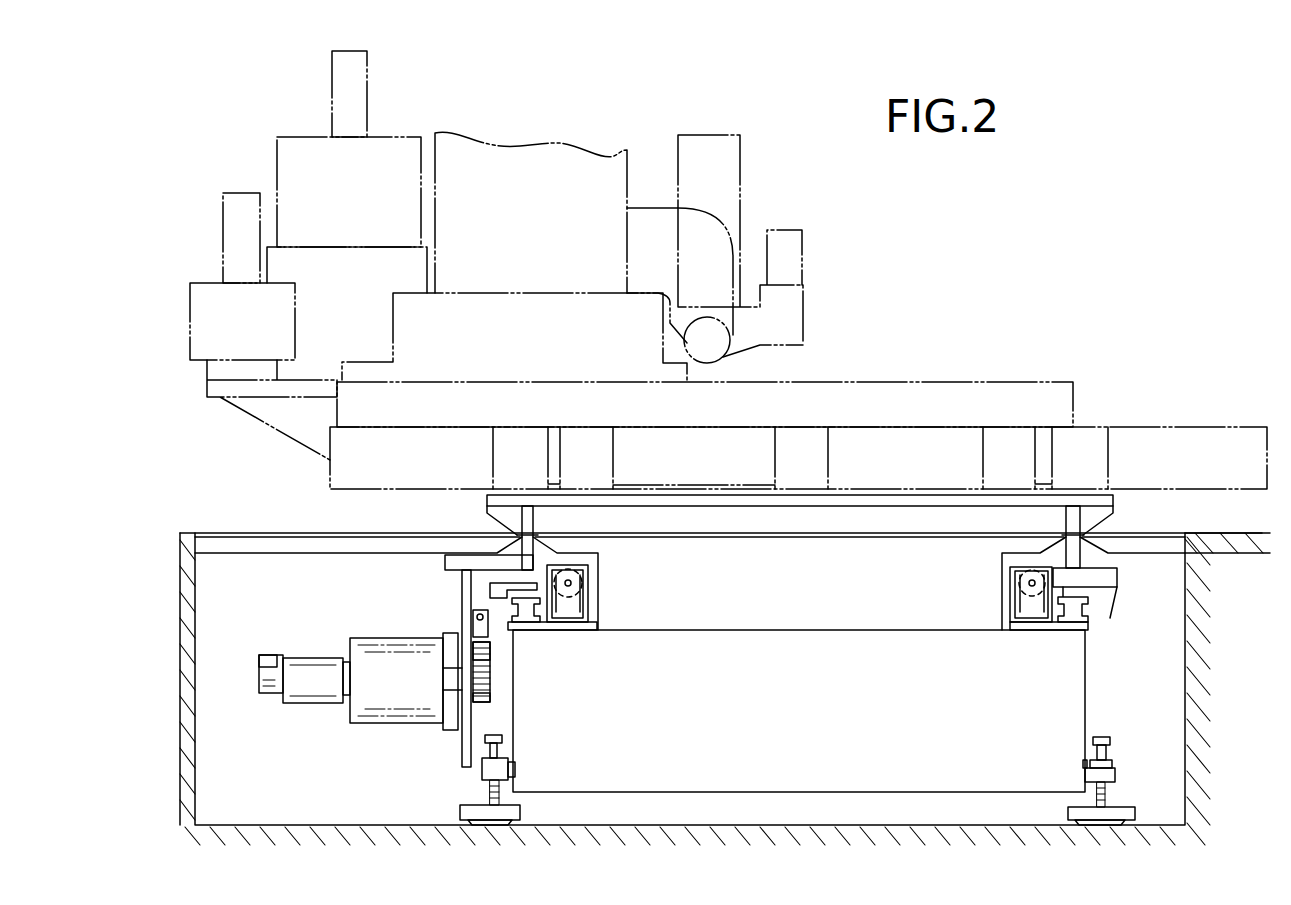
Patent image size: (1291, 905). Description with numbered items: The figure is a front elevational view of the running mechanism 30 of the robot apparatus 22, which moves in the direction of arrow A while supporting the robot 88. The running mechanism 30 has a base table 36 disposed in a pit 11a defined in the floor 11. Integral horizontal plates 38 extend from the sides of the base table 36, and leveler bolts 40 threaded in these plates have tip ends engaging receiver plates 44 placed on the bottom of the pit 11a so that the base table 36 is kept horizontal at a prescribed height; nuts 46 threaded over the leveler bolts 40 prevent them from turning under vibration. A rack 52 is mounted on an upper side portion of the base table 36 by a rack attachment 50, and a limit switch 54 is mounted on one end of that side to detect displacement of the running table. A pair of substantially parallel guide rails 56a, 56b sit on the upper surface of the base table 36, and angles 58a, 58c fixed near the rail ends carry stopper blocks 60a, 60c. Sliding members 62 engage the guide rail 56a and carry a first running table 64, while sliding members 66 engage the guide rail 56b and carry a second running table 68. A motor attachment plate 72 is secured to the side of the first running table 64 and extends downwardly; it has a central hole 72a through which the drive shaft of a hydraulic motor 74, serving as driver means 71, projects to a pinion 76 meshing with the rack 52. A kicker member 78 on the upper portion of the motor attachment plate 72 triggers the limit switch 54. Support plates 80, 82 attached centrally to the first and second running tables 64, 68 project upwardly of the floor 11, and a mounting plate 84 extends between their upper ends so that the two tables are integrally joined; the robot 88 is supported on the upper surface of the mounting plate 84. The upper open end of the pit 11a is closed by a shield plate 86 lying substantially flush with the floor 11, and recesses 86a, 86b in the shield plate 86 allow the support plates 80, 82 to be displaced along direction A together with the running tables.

The robot apparatus 22 is at (870, 308).
The robot 88 is at (548, 160).
The running mechanism 30 is at (272, 482).
The mounting plate 84 is at (875, 500).
The support plate 80 is at (515, 535).
The support plate 82 is at (1085, 535).
The floor 11 is at (1222, 542).
The pit 11a is at (1255, 671).
The driver means 71 is at (295, 612).
The shield plate 86 is at (850, 538).
The recess 86a is at (545, 535).
The recess 86b is at (1065, 535).
The first running table 64 is at (458, 563).
The sliding members 62 is at (490, 592).
The kicker member 78 is at (497, 598).
The limit switch 54 is at (476, 616).
The guide rail 56a is at (530, 623).
The guide rail 56b is at (1088, 624).
The angle 58a is at (575, 623).
The angle 58c is at (1032, 622).
The stopper block 60a is at (588, 584).
The stopper block 60c is at (1014, 586).
The second running table 68 is at (1110, 578).
The sliding members 66 is at (1092, 598).
The base table 36 is at (1080, 691).
The hydraulic motor 74 is at (393, 718).
The hole 72a is at (450, 710).
The motor attachment plate 72 is at (462, 757).
The rack 52 is at (490, 690).
The rack attachment 50 is at (490, 650).
The pinion 76 is at (492, 700).
The horizontal plates 38 is at (485, 771).
The leveler bolts 40 is at (498, 750).
The nuts 46 is at (513, 768).
The receiver plates 44 is at (518, 812).